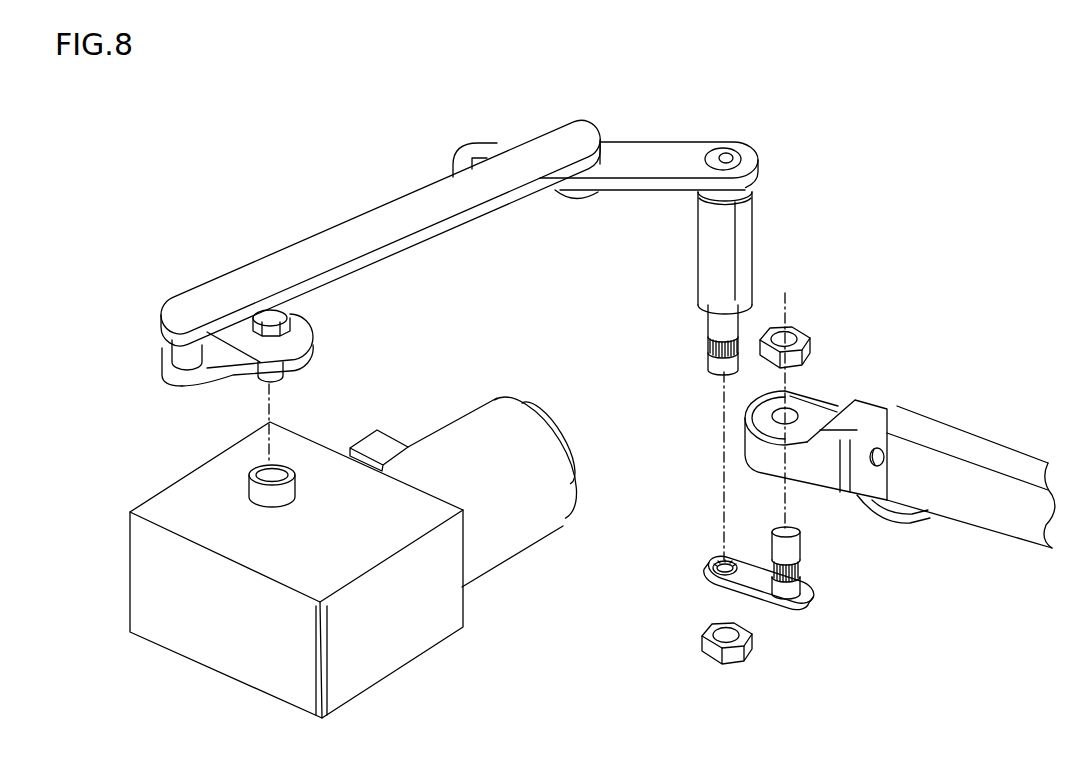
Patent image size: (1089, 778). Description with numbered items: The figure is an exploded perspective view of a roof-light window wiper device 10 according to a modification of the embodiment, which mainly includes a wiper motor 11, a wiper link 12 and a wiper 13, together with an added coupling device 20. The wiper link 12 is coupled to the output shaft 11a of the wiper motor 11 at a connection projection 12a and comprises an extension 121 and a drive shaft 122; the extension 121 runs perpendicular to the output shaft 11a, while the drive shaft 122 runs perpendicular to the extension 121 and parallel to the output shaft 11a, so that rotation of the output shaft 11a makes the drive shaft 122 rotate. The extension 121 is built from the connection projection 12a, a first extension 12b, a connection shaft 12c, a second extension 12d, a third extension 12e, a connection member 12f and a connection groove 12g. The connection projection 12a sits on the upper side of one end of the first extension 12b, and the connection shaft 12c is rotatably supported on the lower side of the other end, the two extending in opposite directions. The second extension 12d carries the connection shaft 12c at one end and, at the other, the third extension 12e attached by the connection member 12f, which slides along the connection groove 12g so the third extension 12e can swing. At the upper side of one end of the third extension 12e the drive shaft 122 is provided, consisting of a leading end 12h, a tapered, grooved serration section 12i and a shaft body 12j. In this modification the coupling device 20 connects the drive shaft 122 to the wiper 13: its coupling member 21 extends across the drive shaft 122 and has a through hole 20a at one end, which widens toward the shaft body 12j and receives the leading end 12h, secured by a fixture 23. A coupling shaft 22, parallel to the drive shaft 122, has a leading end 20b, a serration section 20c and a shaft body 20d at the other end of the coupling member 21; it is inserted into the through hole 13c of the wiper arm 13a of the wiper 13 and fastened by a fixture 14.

The roof-light window wiper device 10 is at (733, 100).
The wiper motor 11 is at (208, 626).
The output shaft 11a is at (258, 492).
The wiper link 12 is at (662, 305).
The extension 121 is at (545, 180).
The drive shaft 122 is at (710, 223).
The connection projection 12a is at (268, 378).
The first extension 12b is at (240, 335).
The connection shaft 12c is at (182, 350).
The second extension 12d is at (313, 258).
The third extension 12e is at (667, 160).
The connection member 12f is at (603, 190).
The connection groove 12g is at (478, 150).
The leading end 12h is at (710, 368).
The serration section 12i is at (708, 346).
The shaft body 12j is at (746, 212).
The wiper 13 is at (900, 482).
The wiper arm 13a is at (1014, 520).
The through hole 13c is at (790, 410).
The fixture 14 is at (797, 328).
The coupling device 20 is at (712, 586).
The through hole 20a is at (721, 562).
The leading end 20b is at (796, 547).
The serration section 20c is at (800, 568).
The shaft body 20d is at (790, 600).
The coupling member 21 is at (755, 578).
The coupling shaft 22 is at (793, 588).
The fixture 23 is at (712, 650).